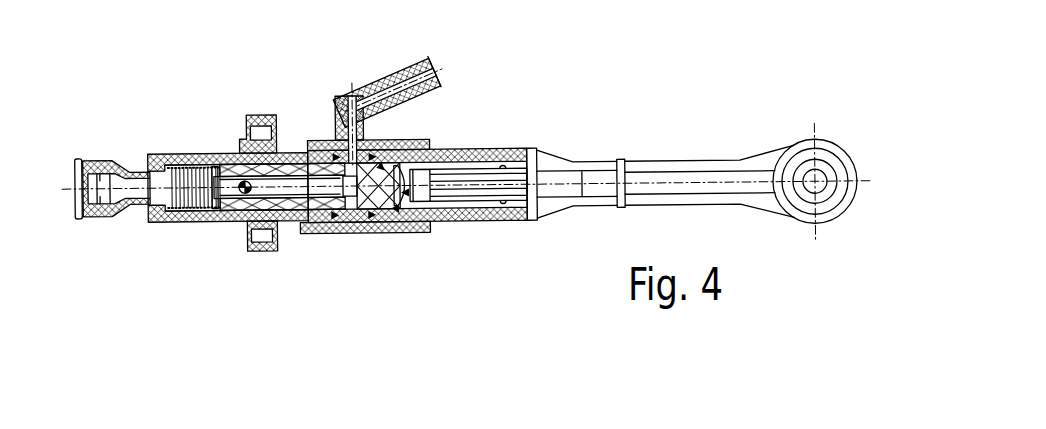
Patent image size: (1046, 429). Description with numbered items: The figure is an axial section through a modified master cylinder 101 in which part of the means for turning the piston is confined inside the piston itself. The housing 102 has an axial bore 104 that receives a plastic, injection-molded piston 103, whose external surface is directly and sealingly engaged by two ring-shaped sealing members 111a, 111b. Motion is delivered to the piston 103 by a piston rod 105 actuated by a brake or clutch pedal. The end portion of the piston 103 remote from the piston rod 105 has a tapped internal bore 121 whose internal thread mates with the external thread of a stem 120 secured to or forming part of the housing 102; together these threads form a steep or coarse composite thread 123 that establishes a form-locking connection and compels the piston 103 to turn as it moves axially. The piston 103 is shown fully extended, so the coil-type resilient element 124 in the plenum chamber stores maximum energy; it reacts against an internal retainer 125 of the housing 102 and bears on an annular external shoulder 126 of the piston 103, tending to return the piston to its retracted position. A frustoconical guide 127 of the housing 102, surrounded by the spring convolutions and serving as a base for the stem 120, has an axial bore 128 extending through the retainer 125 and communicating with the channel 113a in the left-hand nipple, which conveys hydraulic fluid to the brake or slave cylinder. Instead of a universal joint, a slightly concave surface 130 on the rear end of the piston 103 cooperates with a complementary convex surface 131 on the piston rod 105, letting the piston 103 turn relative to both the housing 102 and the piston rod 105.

The master cylinder 101 is at (532, 136).
The housing 102 is at (228, 158).
The piston 103 is at (394, 218).
The axial bore 104 is at (440, 162).
The piston rod 105 is at (685, 163).
The ring-shaped sealing member 111a is at (340, 218).
The ring-shaped sealing member 111b is at (389, 215).
The channel 113a is at (88, 197).
The stem 120 is at (281, 195).
The tapped internal bore 121 is at (355, 195).
The composite thread 123 is at (233, 195).
The resilient element 124 is at (172, 170).
The internal retainer 125 is at (158, 205).
The annular external shoulder 126 is at (213, 170).
The frustoconical guide 127 is at (183, 200).
The axial bore 128 is at (146, 208).
The concave surface 130 is at (387, 134).
The convex surface 131 is at (410, 195).